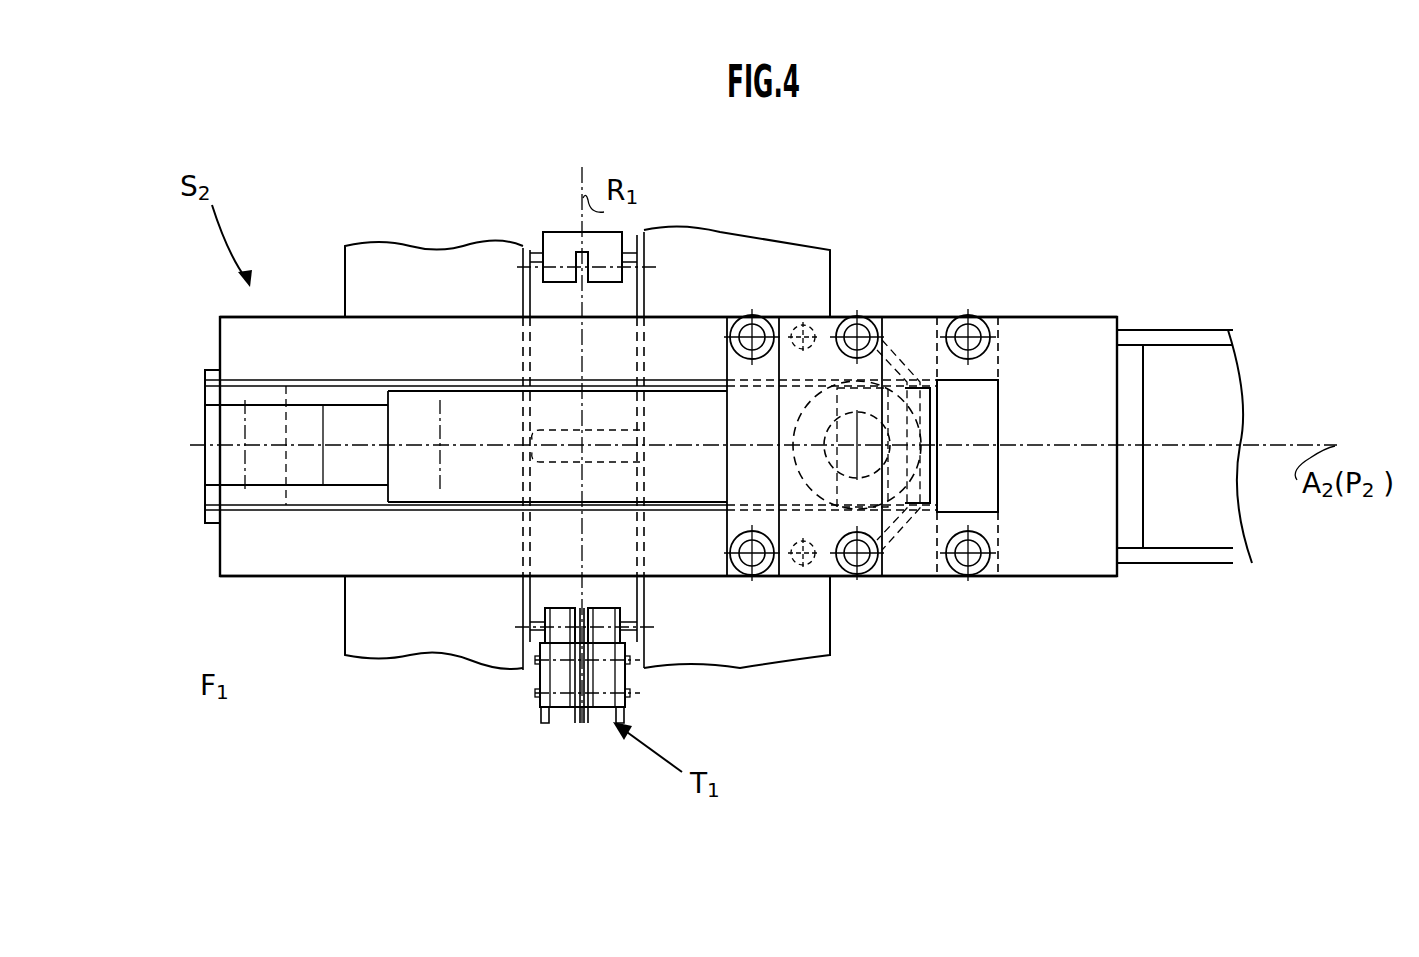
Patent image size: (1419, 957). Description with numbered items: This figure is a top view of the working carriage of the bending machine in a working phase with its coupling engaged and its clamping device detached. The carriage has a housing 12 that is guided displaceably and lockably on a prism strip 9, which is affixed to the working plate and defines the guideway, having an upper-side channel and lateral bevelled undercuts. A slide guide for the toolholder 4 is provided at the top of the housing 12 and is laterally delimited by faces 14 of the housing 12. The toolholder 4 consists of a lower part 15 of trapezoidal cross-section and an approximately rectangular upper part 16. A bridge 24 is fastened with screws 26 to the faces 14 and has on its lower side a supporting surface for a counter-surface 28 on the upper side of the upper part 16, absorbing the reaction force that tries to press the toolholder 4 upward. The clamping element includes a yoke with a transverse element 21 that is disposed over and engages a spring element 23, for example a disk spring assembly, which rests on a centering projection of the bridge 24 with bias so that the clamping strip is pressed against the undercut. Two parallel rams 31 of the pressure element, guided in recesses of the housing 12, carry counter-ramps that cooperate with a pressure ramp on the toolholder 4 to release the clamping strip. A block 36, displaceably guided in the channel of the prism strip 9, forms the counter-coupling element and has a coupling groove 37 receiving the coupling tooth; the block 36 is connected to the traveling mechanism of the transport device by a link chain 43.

The toolholder 4 is at (190, 470).
The prism strip 9 is at (438, 638).
The housing 12 is at (246, 578).
The faces 14 is at (328, 350).
The lower part 15 is at (228, 427).
The upper part 16 is at (413, 413).
The transverse element 21 is at (852, 320).
The spring element 23 is at (1000, 420).
The bridge 24 is at (720, 362).
The screws 26 is at (770, 335).
The counter-surface 28 is at (667, 418).
The rams 31 is at (1000, 397).
The block 36 is at (620, 590).
The coupling groove 37 is at (535, 438).
The link chain 43 is at (610, 703).